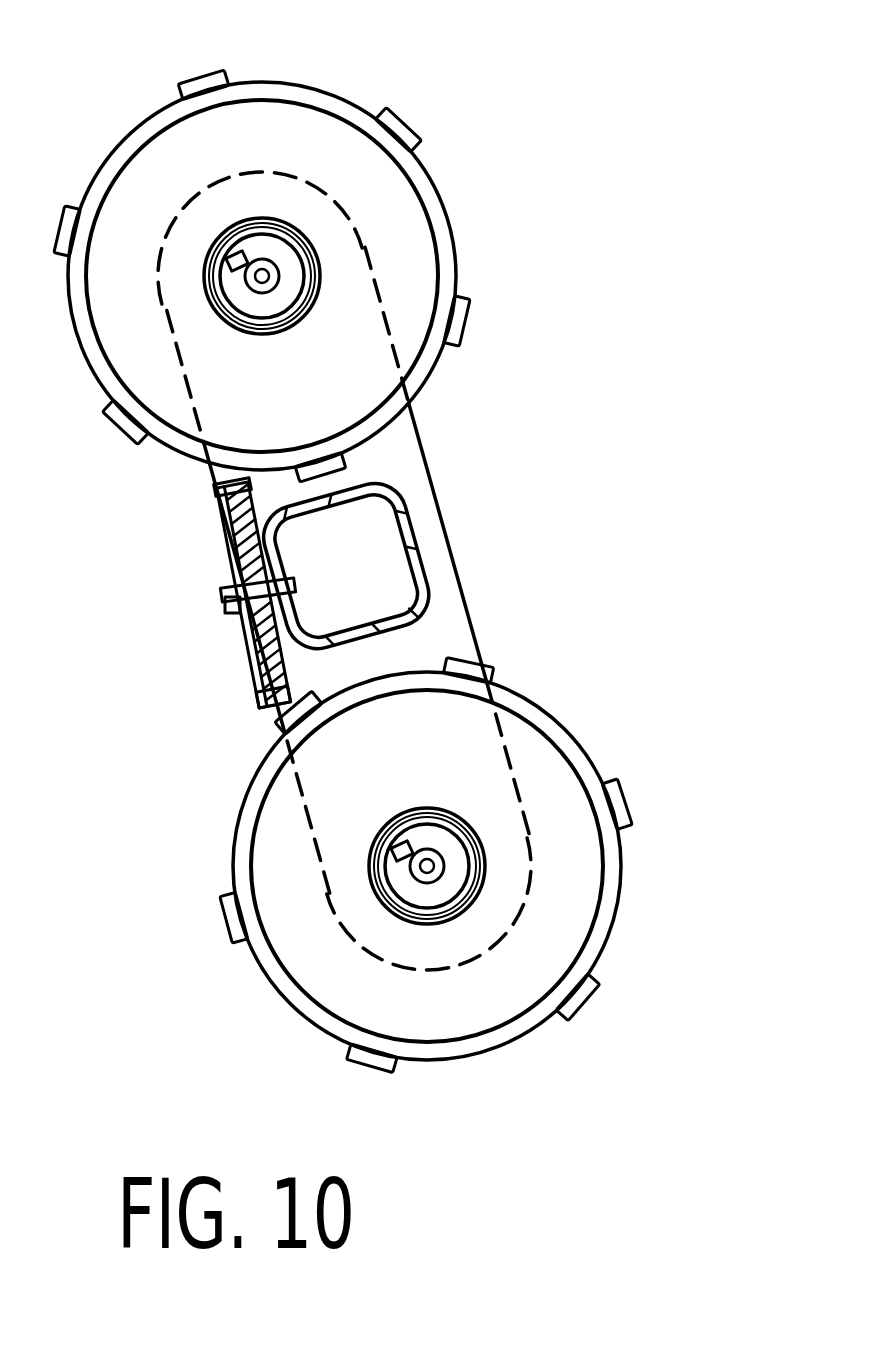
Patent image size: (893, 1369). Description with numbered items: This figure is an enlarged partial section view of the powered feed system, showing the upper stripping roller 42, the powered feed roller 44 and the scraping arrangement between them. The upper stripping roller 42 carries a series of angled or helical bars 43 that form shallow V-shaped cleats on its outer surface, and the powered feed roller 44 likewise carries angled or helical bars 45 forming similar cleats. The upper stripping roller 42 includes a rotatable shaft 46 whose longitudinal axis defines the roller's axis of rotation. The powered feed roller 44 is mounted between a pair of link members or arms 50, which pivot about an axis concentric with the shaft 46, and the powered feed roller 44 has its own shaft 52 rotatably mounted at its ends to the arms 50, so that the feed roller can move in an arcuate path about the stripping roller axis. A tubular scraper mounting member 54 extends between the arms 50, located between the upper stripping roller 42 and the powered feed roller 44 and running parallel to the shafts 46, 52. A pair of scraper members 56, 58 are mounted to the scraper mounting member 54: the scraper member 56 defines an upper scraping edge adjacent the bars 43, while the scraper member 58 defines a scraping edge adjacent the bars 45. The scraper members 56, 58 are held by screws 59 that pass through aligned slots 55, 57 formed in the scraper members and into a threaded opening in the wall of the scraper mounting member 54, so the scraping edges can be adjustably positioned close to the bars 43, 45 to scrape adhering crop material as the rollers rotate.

The upper stripping roller 42 is at (447, 188).
The angled or helical bars 43 is at (400, 120).
The powered feed roller 44 is at (566, 722).
The angled or helical bars 45 is at (625, 808).
The rotatable shaft 46 is at (320, 273).
The link members or arms 50 is at (477, 633).
The shaft 52 is at (477, 890).
The tubular scraper mounting member 54 is at (432, 497).
The slot 55 is at (207, 623).
The scraper member 56 is at (215, 518).
The slot 57 is at (230, 572).
The scraper member 58 is at (211, 727).
The screws 59 is at (233, 598).